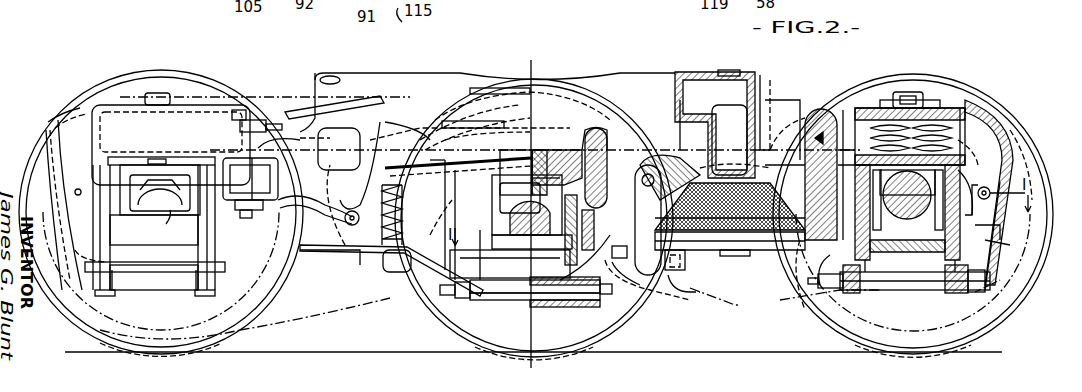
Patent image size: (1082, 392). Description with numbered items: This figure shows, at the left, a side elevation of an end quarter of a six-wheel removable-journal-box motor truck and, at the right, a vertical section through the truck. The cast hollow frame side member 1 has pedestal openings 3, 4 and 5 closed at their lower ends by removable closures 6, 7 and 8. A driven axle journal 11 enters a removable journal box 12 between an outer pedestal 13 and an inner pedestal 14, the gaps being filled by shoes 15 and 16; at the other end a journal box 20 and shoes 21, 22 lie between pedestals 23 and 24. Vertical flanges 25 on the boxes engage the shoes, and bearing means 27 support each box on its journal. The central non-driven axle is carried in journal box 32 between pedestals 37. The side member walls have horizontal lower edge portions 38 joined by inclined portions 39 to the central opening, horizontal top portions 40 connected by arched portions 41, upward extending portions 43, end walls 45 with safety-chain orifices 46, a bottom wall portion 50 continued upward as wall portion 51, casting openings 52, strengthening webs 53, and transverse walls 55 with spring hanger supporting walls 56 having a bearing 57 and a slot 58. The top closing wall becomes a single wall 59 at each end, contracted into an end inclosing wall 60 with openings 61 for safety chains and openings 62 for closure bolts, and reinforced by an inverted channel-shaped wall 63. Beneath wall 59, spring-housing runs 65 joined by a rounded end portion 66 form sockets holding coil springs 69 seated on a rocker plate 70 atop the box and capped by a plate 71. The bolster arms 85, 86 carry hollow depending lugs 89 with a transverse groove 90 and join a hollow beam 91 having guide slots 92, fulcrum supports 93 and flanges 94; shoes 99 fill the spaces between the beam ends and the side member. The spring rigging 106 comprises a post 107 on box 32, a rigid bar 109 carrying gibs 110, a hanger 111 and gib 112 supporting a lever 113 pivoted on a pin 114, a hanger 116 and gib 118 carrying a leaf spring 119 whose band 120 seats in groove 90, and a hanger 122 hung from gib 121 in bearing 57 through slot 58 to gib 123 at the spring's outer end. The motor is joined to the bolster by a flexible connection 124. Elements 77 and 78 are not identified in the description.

The frame side member 1 is at (37, 140).
The pedestal openings 3 is at (168, 280).
The pedestal openings 4 is at (888, 286).
The pedestal openings 5 is at (521, 296).
The removable closure 6 is at (172, 296).
The removable closure 7 is at (930, 292).
The removable closure 8 is at (550, 300).
The end journals 11 is at (168, 211).
The removable journal boxes 12 is at (154, 234).
The outer pedestal 13 is at (100, 230).
The inner pedestal 14 is at (218, 229).
The filler or shoe 15 is at (120, 280).
The filler or shoe 16 is at (196, 280).
The journal box 20 is at (910, 252).
The filler or shoe 21 is at (866, 272).
The filler or shoe 22 is at (956, 278).
The outer pedestal 23 is at (1010, 250).
The inner pedestal 24 is at (822, 272).
The vertical flange 25 is at (108, 182).
The bearing means 27 is at (183, 187).
The removable journal boxes 32 is at (458, 260).
The pedestals 37 is at (600, 285).
The horizontal lower edge portions 38 is at (347, 250).
The downward inclined portions 39 is at (450, 258).
The horizontal portions 40 is at (762, 75).
The arched portions 41 is at (465, 104).
The upward extending portions 43 is at (116, 115).
The outer and inner walls 45 is at (63, 120).
The orifices 46 is at (1012, 224).
The bottom closing wall portion 50 is at (648, 310).
The wall portion 51 is at (638, 292).
The openings 52 is at (532, 226).
The strengthening webs 53 is at (870, 114).
The transverse wall 55 is at (822, 102).
The horizontal wall 56 is at (747, 194).
The bearing 57 is at (800, 106).
The slot 58 is at (821, 174).
The single wall 59 is at (964, 107).
The end inclosing wall 60 is at (1017, 134).
The openings 61 is at (1015, 186).
The openings 62 is at (990, 280).
The inverted channel-shaped walls 63 is at (907, 92).
The runs 65 is at (960, 90).
The rounded vertical end portion 66 is at (995, 122).
The coil spring 69 is at (882, 108).
The rocker plate 70 is at (976, 175).
The plate 71 is at (927, 100).
The bracket 77 is at (392, 273).
The pin 78 is at (627, 262).
The arm 85 is at (410, 62).
The arm 86 is at (692, 76).
The hollow depending lug 89 is at (705, 143).
The transverse groove 90 is at (729, 140).
The hollow beam 91 is at (455, 220).
The guide slot 92 is at (306, 110).
The depending fulcrum support 93 is at (344, 218).
The flanges 94 is at (460, 119).
The filler or shoe 99 is at (265, 122).
The spring rigging 106 is at (580, 147).
The post 107 is at (526, 130).
The rigid bar 109 is at (545, 151).
The gib 110 is at (592, 131).
The hanger 111 is at (612, 125).
The gib 112 is at (587, 230).
The lever 113 is at (678, 106).
The pin 114 is at (730, 206).
The hanger 116 is at (674, 274).
The gib 118 is at (690, 294).
The leaf spring 119 is at (753, 252).
The band 120 is at (731, 248).
The gib 121 is at (796, 132).
The hanger 122 is at (790, 276).
The gib 123 is at (800, 305).
The flexible connection 124 is at (360, 308).